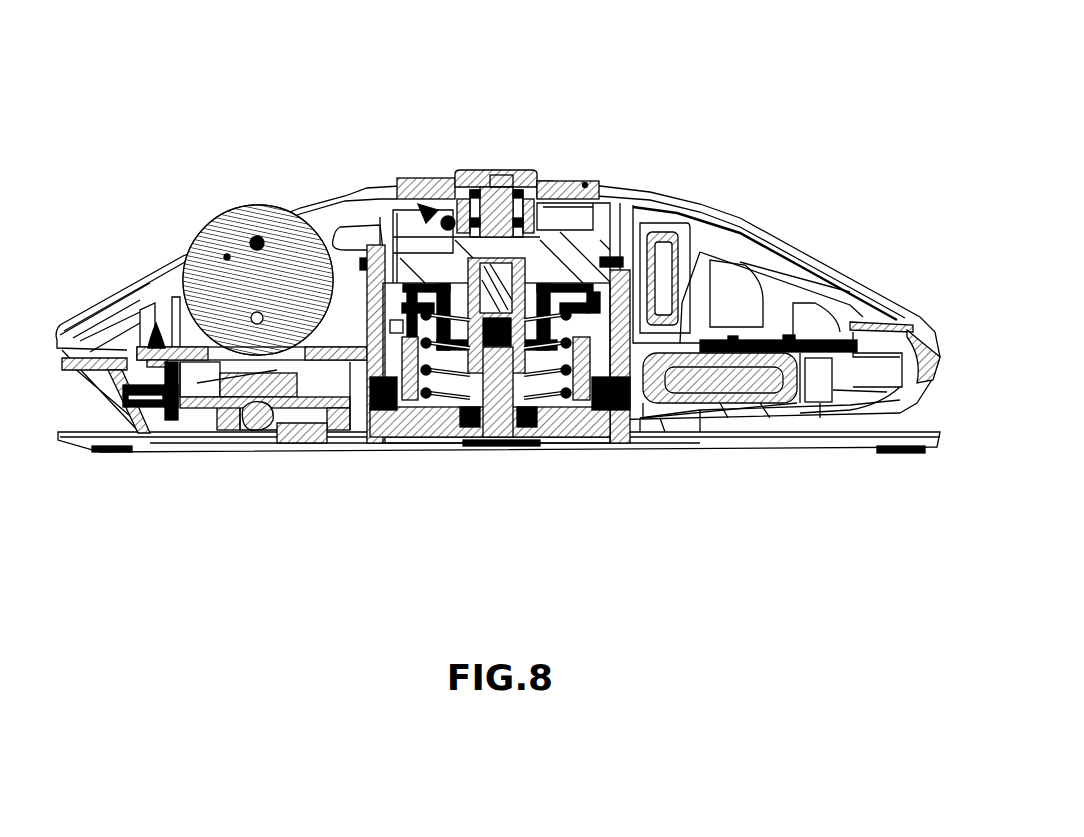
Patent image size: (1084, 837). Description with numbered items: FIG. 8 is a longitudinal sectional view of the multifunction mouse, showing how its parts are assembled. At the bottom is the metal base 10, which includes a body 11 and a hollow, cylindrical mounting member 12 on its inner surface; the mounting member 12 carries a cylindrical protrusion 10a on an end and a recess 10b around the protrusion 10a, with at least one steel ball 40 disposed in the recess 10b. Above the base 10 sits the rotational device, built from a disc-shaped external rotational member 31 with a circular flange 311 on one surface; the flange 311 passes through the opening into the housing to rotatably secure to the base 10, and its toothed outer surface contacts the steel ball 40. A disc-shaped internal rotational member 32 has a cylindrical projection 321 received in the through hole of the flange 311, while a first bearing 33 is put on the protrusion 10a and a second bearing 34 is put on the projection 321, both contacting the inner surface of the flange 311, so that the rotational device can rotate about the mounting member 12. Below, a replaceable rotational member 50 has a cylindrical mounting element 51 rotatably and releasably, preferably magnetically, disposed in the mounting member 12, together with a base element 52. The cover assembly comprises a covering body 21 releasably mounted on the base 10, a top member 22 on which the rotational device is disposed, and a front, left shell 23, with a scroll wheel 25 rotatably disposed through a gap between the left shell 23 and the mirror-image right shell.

The base 10 is at (715, 520).
The cylindrical protrusion 10a is at (517, 188).
The recess 10b is at (407, 178).
The body 11 is at (850, 410).
The mounting member 12 is at (650, 360).
The covering body 21 is at (797, 273).
The top member 22 is at (683, 303).
The front, left shell 23 is at (127, 288).
The scroll wheel 25 is at (283, 237).
The external rotational member 31 is at (587, 182).
The circular flange 311 is at (625, 285).
The internal rotational member 32 is at (467, 175).
The cylindrical projection 321 is at (495, 175).
The first bearing 33 is at (545, 182).
The second bearing 34 is at (533, 190).
The steel ball 40 is at (440, 181).
The replaceable rotational member 50 is at (505, 537).
The mounting element 51 is at (608, 440).
The base element 52 is at (550, 440).